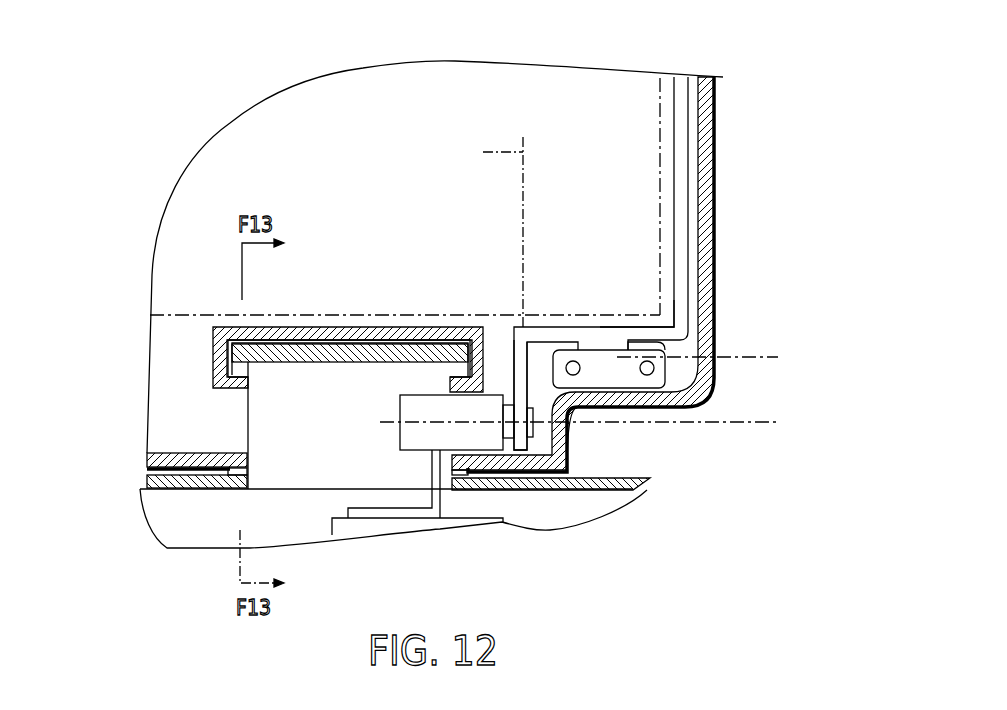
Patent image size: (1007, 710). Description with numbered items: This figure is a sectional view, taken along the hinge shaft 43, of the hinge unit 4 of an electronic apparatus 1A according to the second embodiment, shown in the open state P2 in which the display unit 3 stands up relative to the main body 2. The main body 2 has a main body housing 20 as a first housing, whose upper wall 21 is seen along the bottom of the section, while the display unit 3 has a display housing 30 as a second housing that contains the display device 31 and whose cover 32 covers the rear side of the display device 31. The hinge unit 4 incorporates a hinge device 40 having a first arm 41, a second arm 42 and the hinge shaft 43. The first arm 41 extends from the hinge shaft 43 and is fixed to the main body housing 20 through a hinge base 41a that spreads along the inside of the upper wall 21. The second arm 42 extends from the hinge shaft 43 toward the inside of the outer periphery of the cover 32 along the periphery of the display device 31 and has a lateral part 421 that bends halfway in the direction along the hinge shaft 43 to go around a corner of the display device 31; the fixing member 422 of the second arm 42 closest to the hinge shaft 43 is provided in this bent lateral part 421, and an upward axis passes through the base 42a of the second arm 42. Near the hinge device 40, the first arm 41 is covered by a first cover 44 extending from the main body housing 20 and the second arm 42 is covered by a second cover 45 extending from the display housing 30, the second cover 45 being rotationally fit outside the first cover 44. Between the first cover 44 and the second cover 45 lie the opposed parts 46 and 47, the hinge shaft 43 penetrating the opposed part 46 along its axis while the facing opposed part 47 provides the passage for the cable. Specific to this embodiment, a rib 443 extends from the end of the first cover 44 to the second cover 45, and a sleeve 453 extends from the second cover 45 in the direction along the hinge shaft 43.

The electronic apparatus 1A is at (177, 83).
The main body 2 is at (380, 522).
The display unit 3 is at (160, 217).
The hinge unit 4 is at (363, 395).
The main body housing 20 is at (138, 497).
The upper wall 21 is at (627, 480).
The display housing 30 is at (612, 239).
The display device 31 is at (703, 152).
The cover 32 is at (714, 202).
The hinge device 40 is at (508, 502).
The first arm 41 is at (432, 467).
The hinge base 41a is at (378, 520).
The second arm 42 is at (601, 267).
The base of the second arm 42a is at (520, 443).
The hinge shaft 43 is at (492, 405).
The first cover 44 is at (362, 355).
The second cover 45 is at (538, 465).
The opposed part 46 is at (454, 345).
The opposed part 47 is at (268, 375).
The lateral part 421 is at (623, 328).
The fixing member 422 is at (601, 366).
The rib 443 is at (248, 477).
The sleeve 453 is at (249, 383).
The open state P2 is at (745, 63).